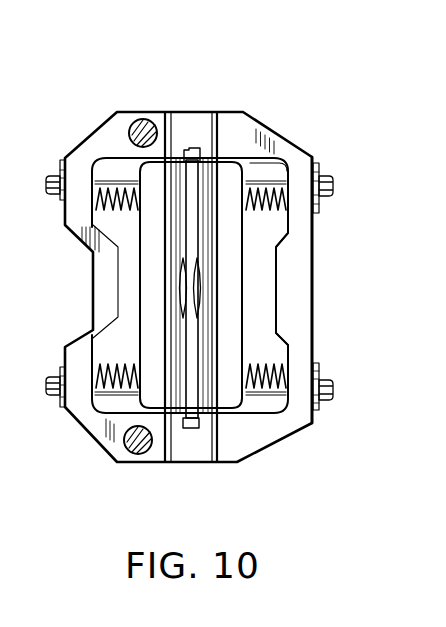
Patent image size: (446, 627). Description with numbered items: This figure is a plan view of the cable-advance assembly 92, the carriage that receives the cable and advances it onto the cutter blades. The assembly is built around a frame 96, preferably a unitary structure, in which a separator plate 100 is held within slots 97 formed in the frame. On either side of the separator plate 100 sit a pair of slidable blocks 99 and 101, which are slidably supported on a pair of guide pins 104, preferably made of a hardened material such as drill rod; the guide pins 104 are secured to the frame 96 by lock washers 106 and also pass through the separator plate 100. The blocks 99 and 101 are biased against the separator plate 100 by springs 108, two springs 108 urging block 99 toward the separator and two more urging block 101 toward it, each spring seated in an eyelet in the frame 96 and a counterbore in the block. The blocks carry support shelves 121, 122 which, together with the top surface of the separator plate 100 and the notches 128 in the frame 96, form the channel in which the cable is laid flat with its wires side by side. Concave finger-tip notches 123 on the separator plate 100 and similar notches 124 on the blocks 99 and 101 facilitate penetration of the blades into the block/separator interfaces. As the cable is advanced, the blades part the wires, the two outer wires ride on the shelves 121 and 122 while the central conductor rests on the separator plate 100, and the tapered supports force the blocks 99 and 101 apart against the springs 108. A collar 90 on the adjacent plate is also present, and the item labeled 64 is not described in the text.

The mounting hole 64 is at (144, 119).
The collar 90 is at (94, 283).
The cable-advance assembly 92 is at (313, 273).
The frame 96 is at (314, 236).
The slots 97 is at (187, 150).
The slidable block 99 is at (241, 278).
The separator plate 100 is at (203, 404).
The slidable block 101 is at (140, 348).
The guide pins 104 is at (334, 391).
The lock washers 106 is at (318, 368).
The springs 108 is at (264, 384).
The support shelf 121 is at (214, 415).
The support shelf 122 is at (167, 428).
The finger-tip notches 123 is at (325, 338).
The notches 124 is at (184, 284).
The notches 128 is at (199, 130).